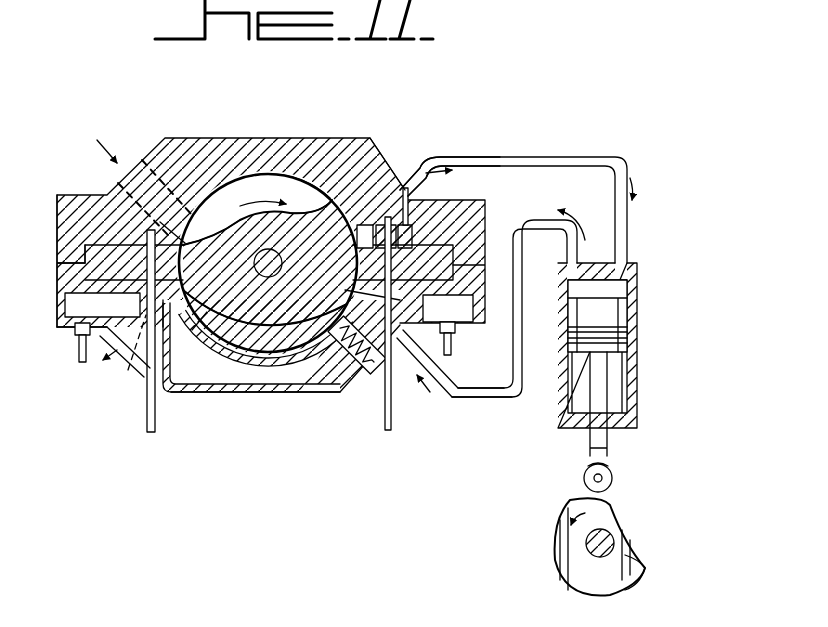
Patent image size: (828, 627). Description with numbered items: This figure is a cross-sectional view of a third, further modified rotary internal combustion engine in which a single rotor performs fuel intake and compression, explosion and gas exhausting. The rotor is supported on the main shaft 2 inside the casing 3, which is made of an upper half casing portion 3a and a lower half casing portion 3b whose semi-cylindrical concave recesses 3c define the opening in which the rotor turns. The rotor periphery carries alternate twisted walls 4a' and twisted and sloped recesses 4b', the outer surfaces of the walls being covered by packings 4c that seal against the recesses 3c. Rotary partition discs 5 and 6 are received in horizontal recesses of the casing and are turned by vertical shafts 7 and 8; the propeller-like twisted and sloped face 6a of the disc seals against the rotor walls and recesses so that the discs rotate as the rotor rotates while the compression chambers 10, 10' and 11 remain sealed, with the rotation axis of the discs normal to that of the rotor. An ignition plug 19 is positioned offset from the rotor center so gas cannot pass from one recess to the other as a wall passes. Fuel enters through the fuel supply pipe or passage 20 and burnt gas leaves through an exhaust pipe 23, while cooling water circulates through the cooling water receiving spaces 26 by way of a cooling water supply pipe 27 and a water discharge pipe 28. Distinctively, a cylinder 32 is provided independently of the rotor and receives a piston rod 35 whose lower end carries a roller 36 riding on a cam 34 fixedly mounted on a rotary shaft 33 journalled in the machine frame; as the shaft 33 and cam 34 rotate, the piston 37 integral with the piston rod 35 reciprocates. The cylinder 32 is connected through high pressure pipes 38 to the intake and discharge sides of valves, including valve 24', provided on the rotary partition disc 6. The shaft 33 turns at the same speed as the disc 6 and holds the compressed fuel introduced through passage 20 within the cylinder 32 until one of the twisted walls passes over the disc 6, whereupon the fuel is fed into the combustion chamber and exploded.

The main shaft 2 is at (263, 278).
The casing 3 is at (333, 143).
The upper half casing portion 3a is at (263, 392).
The lower half casing portion 3b is at (350, 218).
The semi-cylindrical concave recess 3c is at (287, 180).
The twisted wall 4a' is at (281, 171).
The twisted and sloped recess 4b' is at (264, 388).
The packing 4c is at (160, 222).
The rotary partition disc 5 is at (87, 266).
The rotary partition disc 6 is at (425, 250).
The twisted and sloped face 6a is at (473, 247).
The vertical shaft 7 is at (148, 400).
The vertical shaft 8 is at (392, 406).
The compression chamber 10 is at (268, 224).
The compression chamber 10' is at (192, 339).
The compression chamber 11 is at (400, 355).
The ignition plug 19 is at (347, 380).
The fuel supply pipe 20 is at (152, 168).
The exhaust pipe 23 is at (103, 349).
The valve 24' is at (429, 172).
The cooling water receiving space 26 is at (200, 387).
The cooling water supply pipe 27 is at (457, 397).
The water discharge pipe 28 is at (78, 357).
The cylinder 32 is at (637, 382).
The rotary shaft 33 is at (595, 553).
The cam 34 is at (638, 580).
The piston rod 35 is at (583, 445).
The roller 36 is at (612, 482).
The piston 37 is at (620, 318).
The high pressure pipe 38 is at (572, 157).